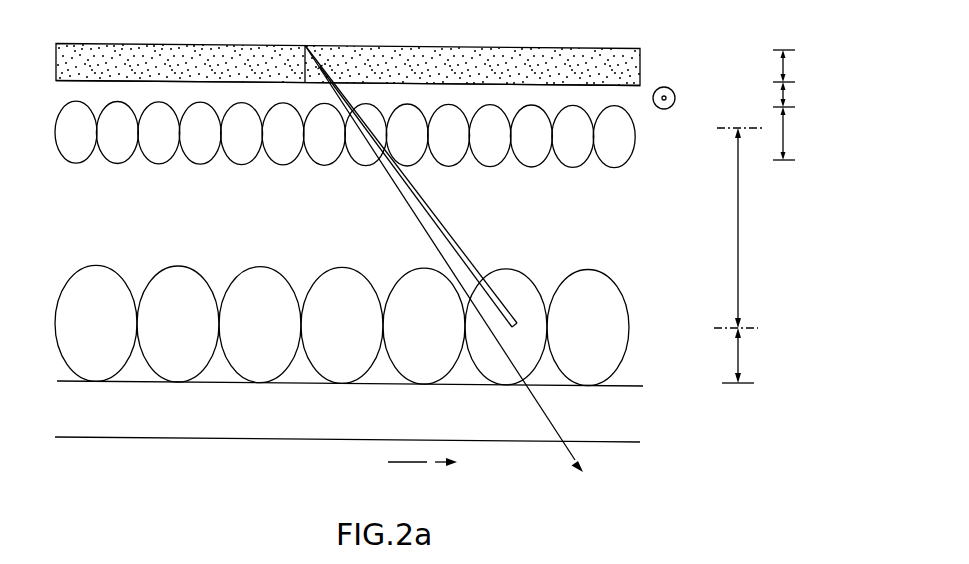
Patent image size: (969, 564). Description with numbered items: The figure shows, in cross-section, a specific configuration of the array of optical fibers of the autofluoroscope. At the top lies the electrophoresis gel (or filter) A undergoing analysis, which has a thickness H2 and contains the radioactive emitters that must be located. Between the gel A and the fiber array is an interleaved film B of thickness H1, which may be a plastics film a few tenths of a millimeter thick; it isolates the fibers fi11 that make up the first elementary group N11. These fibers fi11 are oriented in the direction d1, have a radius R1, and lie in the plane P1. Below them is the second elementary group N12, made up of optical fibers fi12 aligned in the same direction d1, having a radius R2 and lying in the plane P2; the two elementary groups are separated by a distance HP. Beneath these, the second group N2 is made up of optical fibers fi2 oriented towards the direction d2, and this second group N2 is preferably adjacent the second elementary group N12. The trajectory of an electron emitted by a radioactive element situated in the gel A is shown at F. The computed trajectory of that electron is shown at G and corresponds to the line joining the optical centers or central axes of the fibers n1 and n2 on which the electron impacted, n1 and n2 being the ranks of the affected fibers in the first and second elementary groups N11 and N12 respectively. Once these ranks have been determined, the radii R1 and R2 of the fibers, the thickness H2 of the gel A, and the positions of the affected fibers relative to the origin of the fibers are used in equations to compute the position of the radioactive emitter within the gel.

The electrophoresis gel A is at (333, 65).
The interleaved film B is at (333, 89).
The first elementary group N11 is at (72, 141).
The fiber rank in first group n1 is at (366, 153).
The optical fiber of first elementary group fi11 is at (373, 110).
The computed electron trajectory G is at (521, 314).
The second elementary group N12 is at (72, 292).
The fiber rank in second group n2 is at (506, 348).
The optical fiber of second elementary group fi12 is at (336, 366).
The second group N2 is at (123, 429).
The optical fiber of second group fi2 is at (623, 424).
The electron trajectory F is at (452, 263).
The second fiber direction d2 is at (422, 480).
The first fiber direction d1 is at (669, 87).
The first fiber plane P1 is at (714, 142).
The second fiber plane P2 is at (710, 341).
The distance between elementary groups HP is at (785, 228).
The gel thickness H2 is at (795, 66).
The interleaved film thickness H1 is at (797, 97).
The first fiber radius R1 is at (799, 133).
The second fiber radius R2 is at (764, 355).